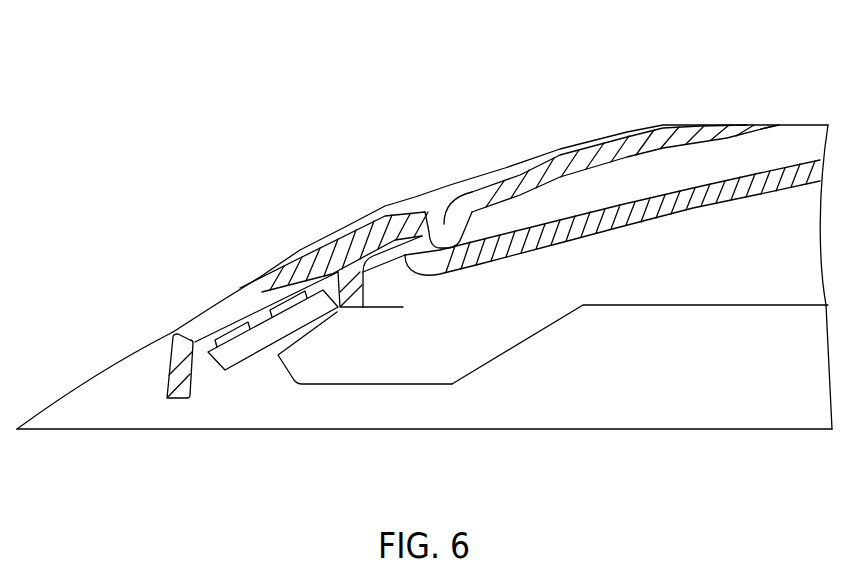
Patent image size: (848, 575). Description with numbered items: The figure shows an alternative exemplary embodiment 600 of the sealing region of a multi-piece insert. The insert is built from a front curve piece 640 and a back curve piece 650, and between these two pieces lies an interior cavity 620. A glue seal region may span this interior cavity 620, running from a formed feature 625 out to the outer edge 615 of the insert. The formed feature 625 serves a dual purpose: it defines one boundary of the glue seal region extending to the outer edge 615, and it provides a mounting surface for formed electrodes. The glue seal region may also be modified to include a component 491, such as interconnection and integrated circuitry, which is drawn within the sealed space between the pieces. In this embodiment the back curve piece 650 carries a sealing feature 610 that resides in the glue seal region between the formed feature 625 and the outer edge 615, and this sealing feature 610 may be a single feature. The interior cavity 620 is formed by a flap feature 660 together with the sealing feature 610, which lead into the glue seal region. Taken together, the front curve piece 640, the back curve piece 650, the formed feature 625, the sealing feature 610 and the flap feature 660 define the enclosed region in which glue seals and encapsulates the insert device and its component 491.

The exemplary embodiment 600 is at (173, 98).
The outer edge 615 is at (186, 352).
The interior cavity 620 is at (332, 278).
The formed feature 625 is at (442, 222).
The front curve piece 640 is at (567, 166).
The back curve piece 650 is at (668, 208).
The sealing feature 610 is at (380, 272).
The flap feature 660 is at (325, 352).
The component 491 is at (221, 367).